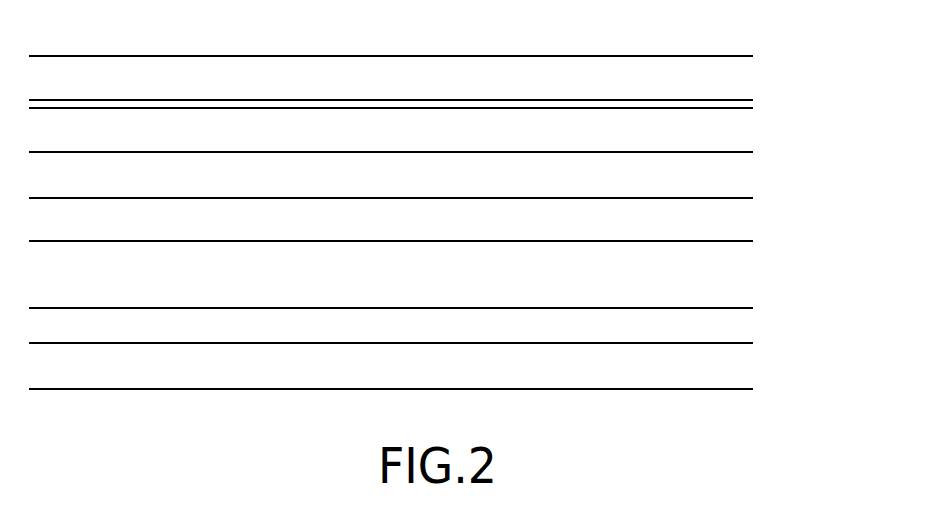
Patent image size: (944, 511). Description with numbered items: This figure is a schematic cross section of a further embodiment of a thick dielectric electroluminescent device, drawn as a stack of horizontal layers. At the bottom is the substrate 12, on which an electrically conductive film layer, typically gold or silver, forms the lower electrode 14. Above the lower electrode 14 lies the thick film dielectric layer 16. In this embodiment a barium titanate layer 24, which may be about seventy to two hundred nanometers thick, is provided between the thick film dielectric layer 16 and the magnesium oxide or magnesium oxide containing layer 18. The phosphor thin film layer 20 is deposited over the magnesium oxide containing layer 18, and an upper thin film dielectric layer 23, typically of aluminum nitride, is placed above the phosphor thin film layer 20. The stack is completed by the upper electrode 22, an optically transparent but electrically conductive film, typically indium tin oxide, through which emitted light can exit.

The substrate 12 is at (750, 368).
The lower electrode 14 is at (750, 327).
The thick film dielectric layer 16 is at (750, 272).
The magnesium oxide containing layer 18 is at (752, 175).
The phosphor thin film layer 20 is at (752, 128).
The upper electrode 22 is at (752, 73).
The upper thin film dielectric layer 23 is at (752, 102).
The barium titanate layer 24 is at (750, 222).